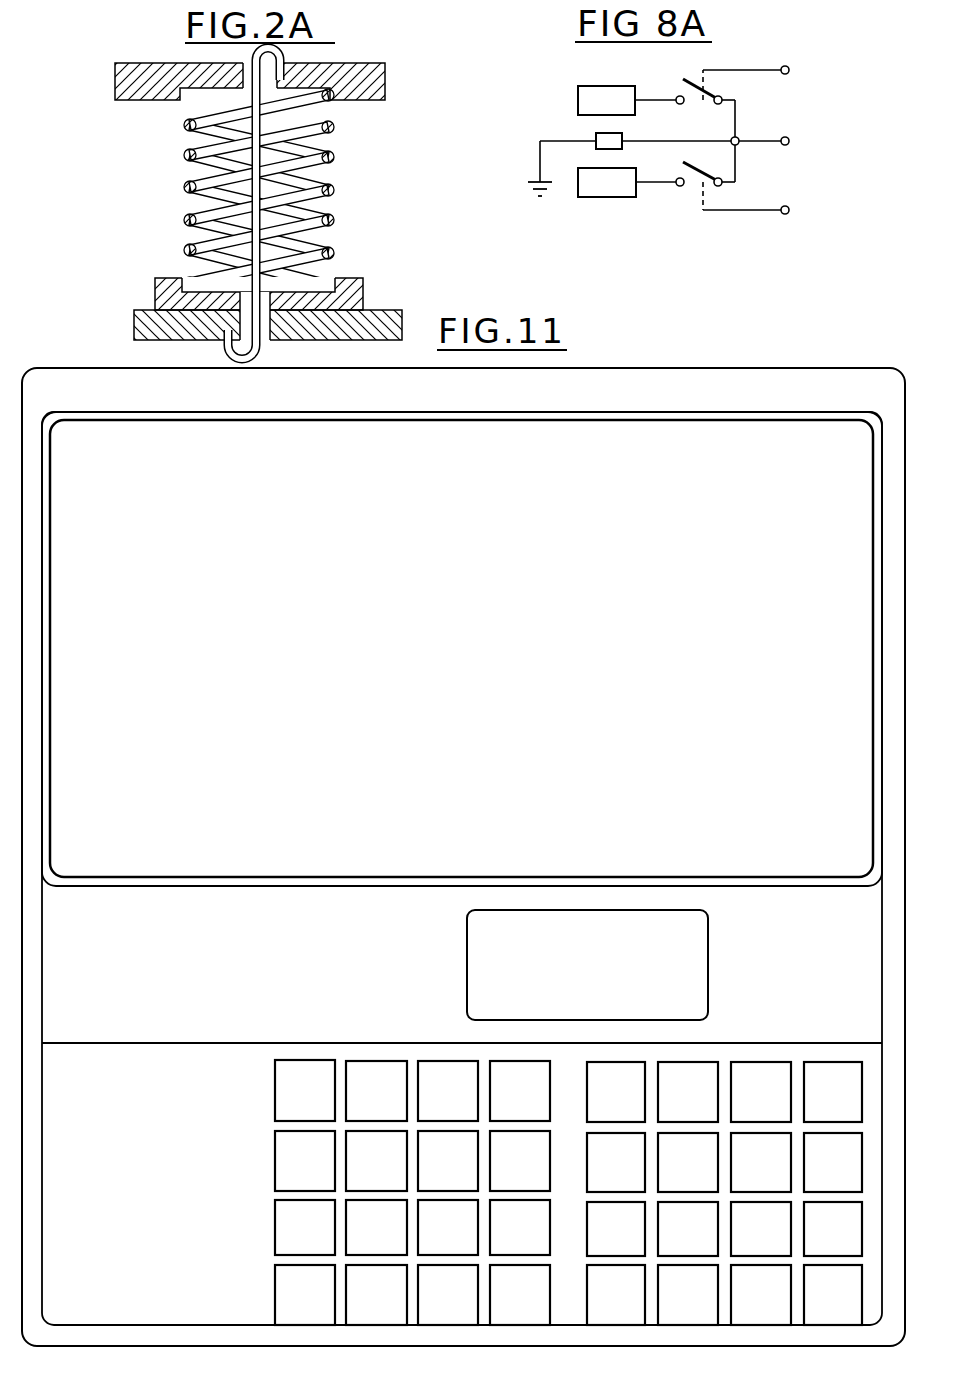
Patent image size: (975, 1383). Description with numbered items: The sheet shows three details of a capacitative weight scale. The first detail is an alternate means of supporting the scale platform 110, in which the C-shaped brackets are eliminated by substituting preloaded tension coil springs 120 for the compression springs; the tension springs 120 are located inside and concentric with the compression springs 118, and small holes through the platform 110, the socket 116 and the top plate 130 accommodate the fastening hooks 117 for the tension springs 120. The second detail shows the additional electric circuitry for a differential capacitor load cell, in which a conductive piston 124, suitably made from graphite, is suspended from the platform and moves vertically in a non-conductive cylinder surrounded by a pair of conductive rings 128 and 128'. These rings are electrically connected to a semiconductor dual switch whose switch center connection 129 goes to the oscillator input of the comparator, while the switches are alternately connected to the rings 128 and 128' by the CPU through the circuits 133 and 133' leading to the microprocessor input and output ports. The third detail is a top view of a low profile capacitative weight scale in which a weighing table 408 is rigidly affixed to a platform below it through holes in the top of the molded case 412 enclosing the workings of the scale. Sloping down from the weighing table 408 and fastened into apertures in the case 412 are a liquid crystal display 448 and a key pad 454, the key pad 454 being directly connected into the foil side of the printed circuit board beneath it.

In FIG. 2A, the platform 110 is at (385, 90).
In FIG. 2A, the socket 116 is at (365, 287).
In FIG. 2A, the fastening hooks 117 is at (286, 54).
In FIG. 2A, the compression springs 118 is at (322, 156).
In FIG. 2A, the preloaded tension coil springs 120 is at (318, 208).
In FIG. 2A, the top plate 130 is at (387, 315).
In FIG. 8A, the conductive piston 124 is at (624, 143).
In FIG. 8A, the conductive ring 128 is at (627, 82).
In FIG. 8A, the conductive ring 128' is at (633, 202).
In FIG. 8A, the switch center connection 129 is at (752, 141).
In FIG. 8A, the circuit 133 is at (802, 68).
In FIG. 8A, the circuit 133' is at (802, 209).
In FIG. 11, the weighing table 408 is at (462, 649).
In FIG. 11, the molded case 412 is at (219, 370).
In FIG. 11, the liquid crystal display 448 is at (587, 965).
In FIG. 11, the key pad 454 is at (573, 1322).